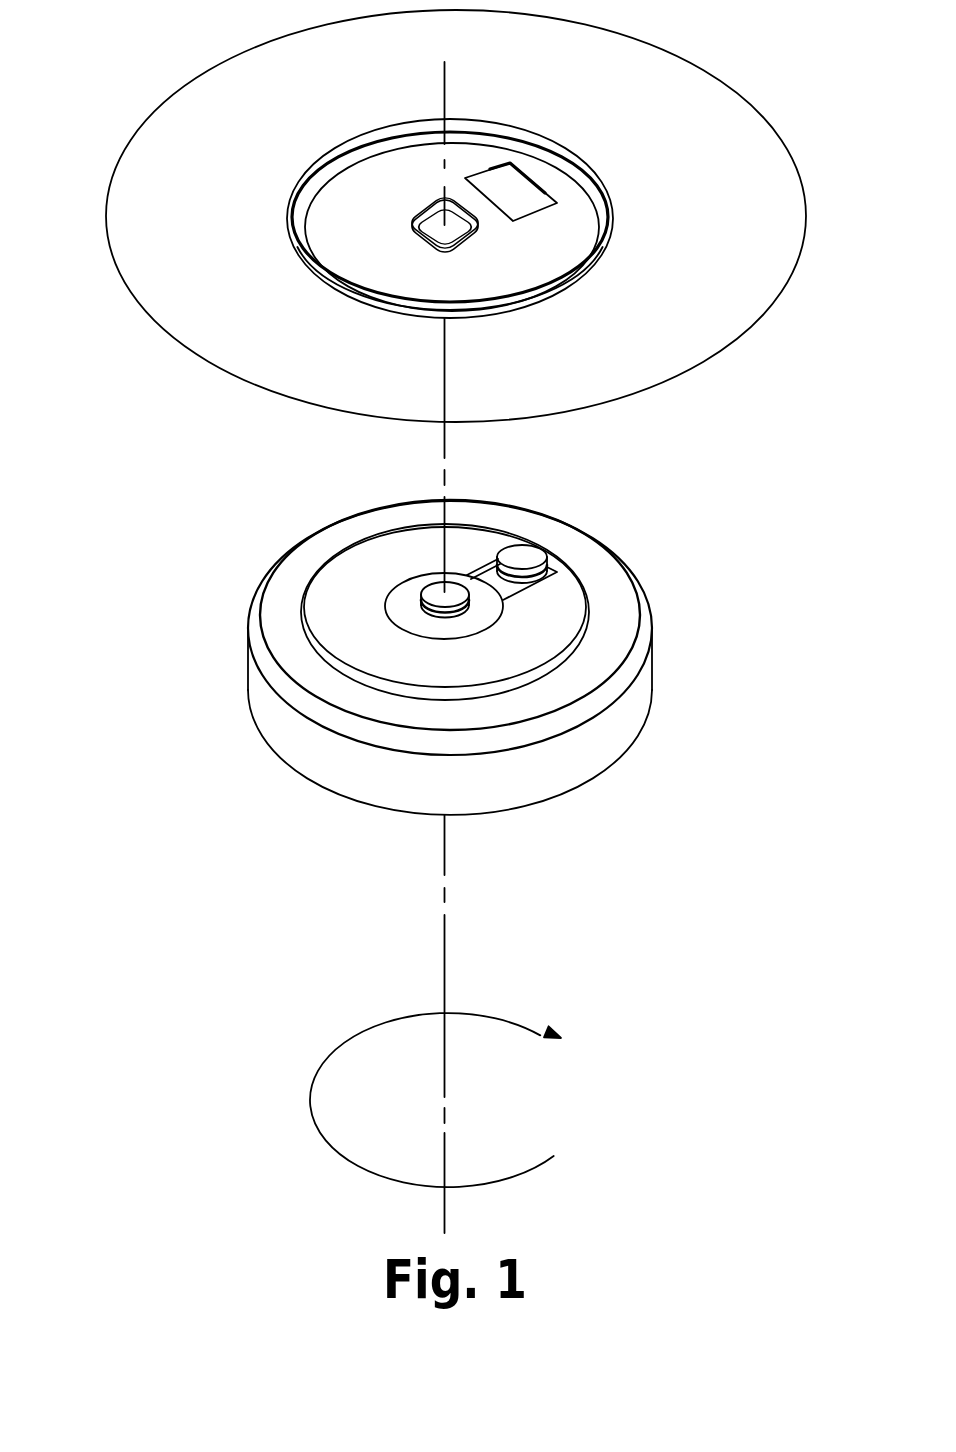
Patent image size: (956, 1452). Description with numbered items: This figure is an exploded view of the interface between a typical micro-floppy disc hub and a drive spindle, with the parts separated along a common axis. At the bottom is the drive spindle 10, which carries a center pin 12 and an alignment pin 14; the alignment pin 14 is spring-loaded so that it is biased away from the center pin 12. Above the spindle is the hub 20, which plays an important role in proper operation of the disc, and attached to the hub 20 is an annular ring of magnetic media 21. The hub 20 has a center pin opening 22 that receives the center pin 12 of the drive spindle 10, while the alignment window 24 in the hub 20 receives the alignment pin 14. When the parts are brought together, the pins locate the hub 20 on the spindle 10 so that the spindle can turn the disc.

The drive spindle 10 is at (617, 572).
The center pin 12 is at (435, 592).
The alignment pin 14 is at (525, 555).
The hub 20 is at (605, 175).
The annular ring of magnetic media 21 is at (648, 77).
The center pin opening 22 is at (462, 218).
The alignment window 24 is at (538, 187).